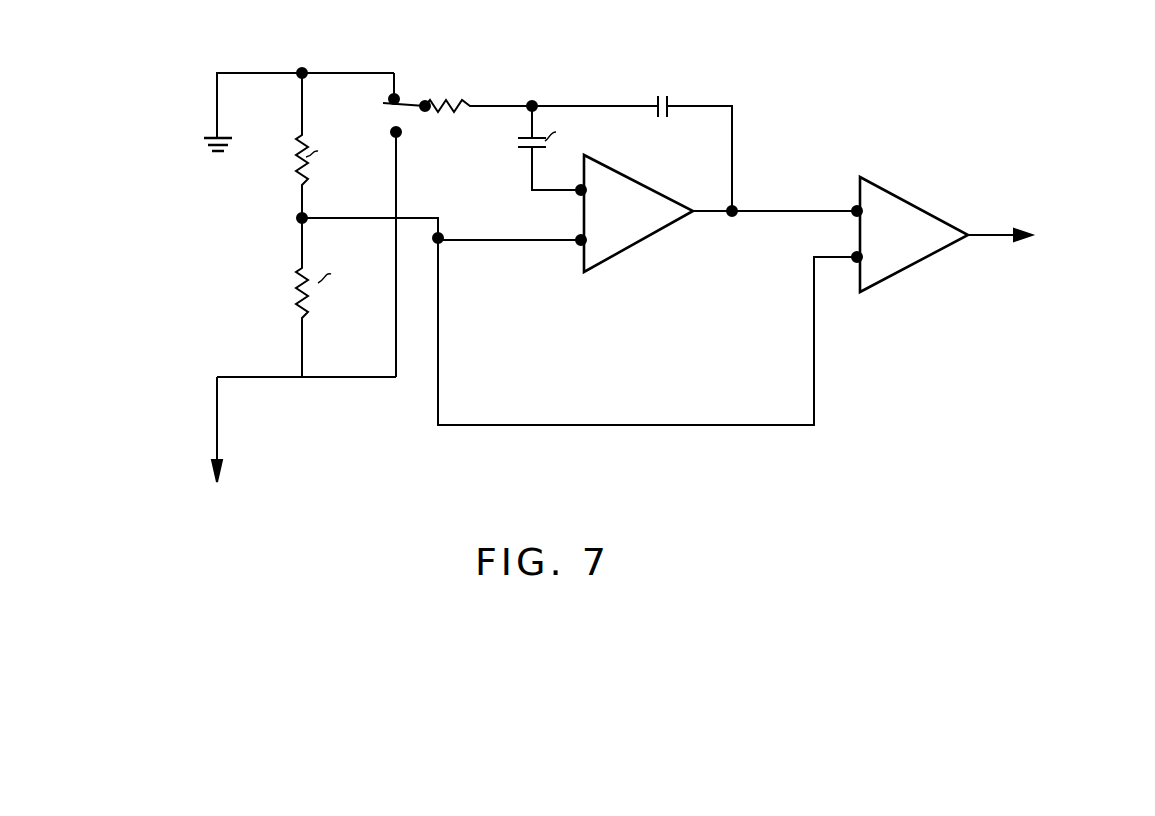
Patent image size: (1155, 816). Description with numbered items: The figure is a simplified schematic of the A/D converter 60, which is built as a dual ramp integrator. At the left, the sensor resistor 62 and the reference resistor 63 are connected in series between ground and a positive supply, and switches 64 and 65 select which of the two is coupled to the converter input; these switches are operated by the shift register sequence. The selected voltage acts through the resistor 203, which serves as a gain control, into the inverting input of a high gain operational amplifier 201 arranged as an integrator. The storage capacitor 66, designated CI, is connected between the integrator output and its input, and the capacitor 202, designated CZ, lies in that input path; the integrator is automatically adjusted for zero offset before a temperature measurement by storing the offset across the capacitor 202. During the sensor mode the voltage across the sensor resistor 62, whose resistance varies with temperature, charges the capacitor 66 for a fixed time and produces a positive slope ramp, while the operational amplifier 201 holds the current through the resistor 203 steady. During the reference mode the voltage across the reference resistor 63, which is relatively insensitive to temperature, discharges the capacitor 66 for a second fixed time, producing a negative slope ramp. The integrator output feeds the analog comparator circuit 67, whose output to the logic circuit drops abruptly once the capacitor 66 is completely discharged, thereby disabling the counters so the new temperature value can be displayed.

The A/D converter 60 is at (695, 53).
The sensor resistor 62 is at (293, 168).
The reference resistor 63 is at (292, 285).
The switch 64 is at (405, 103).
The switch 65 is at (388, 131).
The storage capacitor 66 is at (677, 104).
The analog comparator circuit 67 is at (890, 195).
The operational amplifier 201 is at (620, 230).
The capacitor 202 is at (525, 152).
The resistor 203 is at (455, 106).